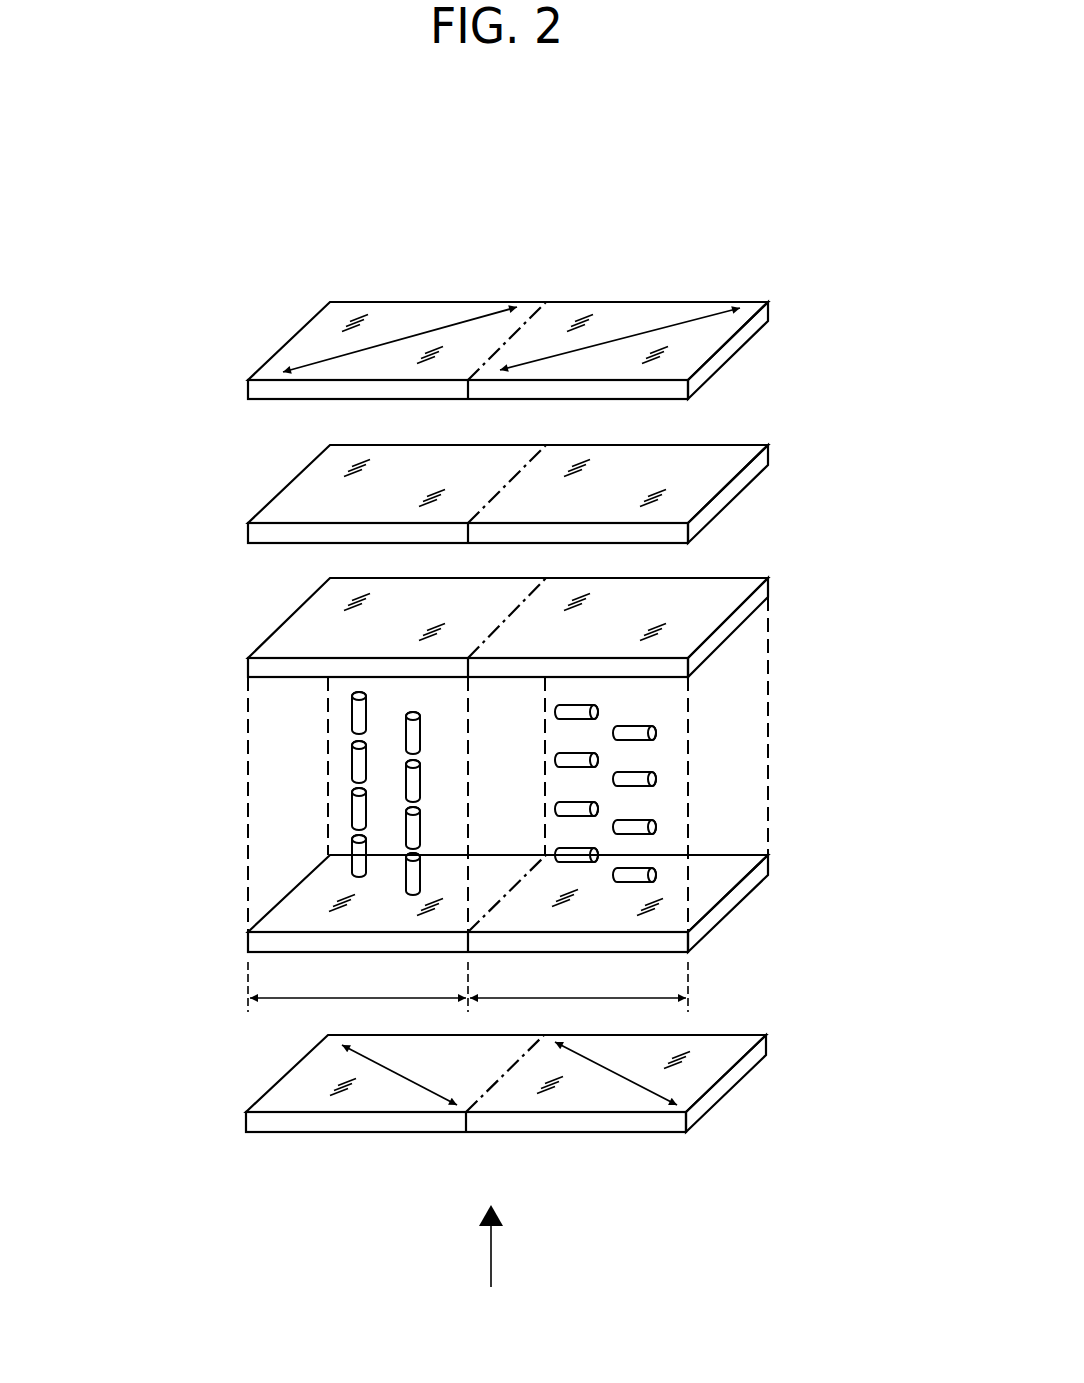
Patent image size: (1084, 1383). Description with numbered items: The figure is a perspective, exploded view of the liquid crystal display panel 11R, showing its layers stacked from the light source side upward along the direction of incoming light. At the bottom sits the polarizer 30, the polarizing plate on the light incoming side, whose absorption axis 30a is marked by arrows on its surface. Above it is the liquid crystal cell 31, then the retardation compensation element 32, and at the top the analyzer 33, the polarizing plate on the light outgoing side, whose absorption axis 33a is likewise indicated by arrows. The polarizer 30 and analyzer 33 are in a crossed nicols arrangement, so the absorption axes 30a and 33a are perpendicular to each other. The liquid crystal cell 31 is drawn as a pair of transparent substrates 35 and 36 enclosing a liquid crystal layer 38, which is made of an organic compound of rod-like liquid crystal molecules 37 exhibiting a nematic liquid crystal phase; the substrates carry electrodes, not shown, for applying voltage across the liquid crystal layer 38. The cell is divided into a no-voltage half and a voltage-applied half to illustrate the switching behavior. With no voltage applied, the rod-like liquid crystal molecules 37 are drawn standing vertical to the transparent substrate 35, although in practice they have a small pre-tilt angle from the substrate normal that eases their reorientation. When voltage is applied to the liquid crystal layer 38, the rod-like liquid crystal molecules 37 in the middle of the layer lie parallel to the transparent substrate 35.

The liquid crystal display panel 11R is at (708, 208).
The analyzer 33 is at (314, 331).
The absorption axis 33a is at (424, 338).
The retardation compensation element 32 is at (308, 489).
The liquid crystal cell 31 is at (221, 783).
The transparent substrate 36 is at (728, 590).
The liquid crystal layer 38 is at (744, 692).
The rod-like liquid crystal molecules 37 is at (352, 766).
The transparent substrate 35 is at (725, 863).
The polarizer 30 is at (301, 1093).
The absorption axis 30a is at (402, 1073).